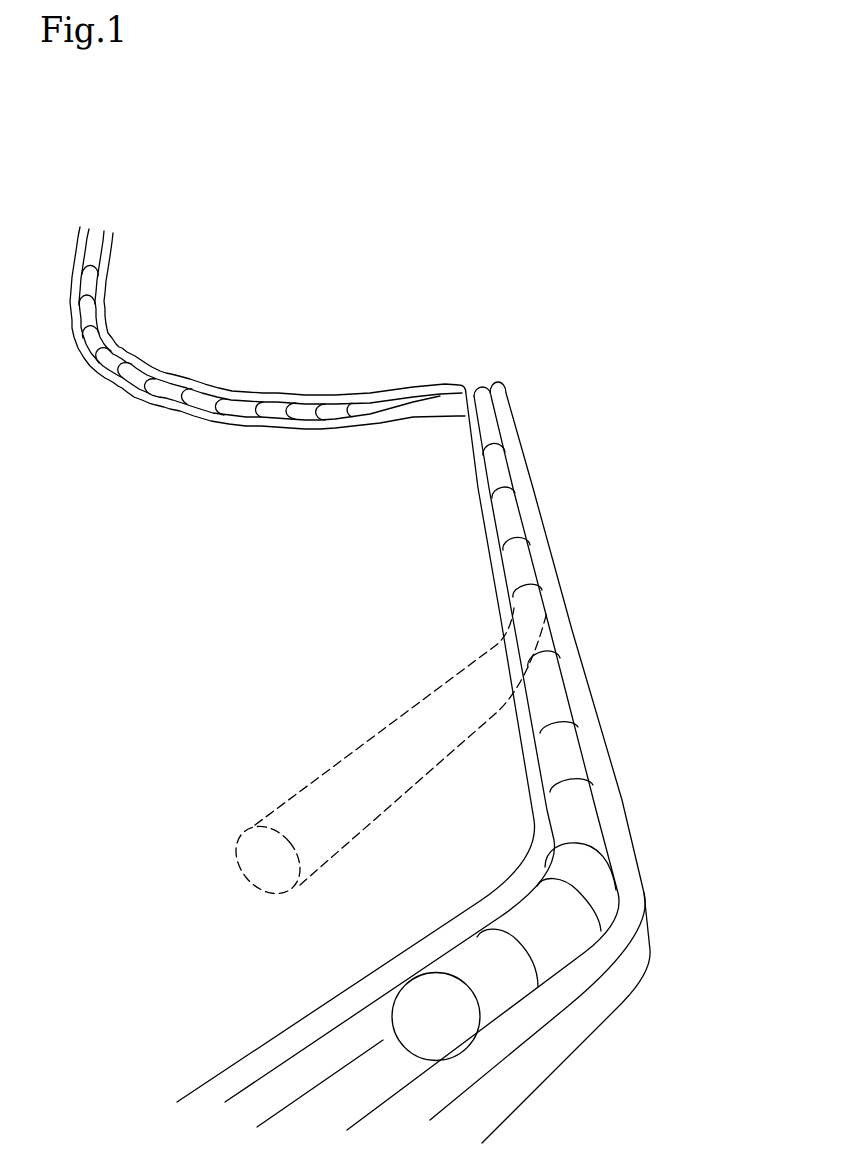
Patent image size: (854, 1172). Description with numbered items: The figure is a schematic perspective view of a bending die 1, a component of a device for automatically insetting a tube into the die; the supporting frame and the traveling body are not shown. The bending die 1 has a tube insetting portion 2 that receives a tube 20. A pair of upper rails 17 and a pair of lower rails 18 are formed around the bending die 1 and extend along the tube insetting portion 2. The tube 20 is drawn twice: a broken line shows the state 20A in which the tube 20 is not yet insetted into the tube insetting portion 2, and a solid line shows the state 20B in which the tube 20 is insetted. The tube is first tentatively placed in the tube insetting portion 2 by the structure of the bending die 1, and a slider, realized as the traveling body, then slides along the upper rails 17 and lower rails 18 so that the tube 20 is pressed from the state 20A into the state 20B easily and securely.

The bending die 1 is at (616, 531).
The tube insetting portion 2 is at (340, 1081).
The upper rails 17 is at (597, 742).
The lower rails 18 is at (410, 418).
The tube 20 is at (519, 494).
The state in which the tube is not yet insetted 20A is at (355, 775).
The state in which the tube is insetted 20B is at (572, 813).